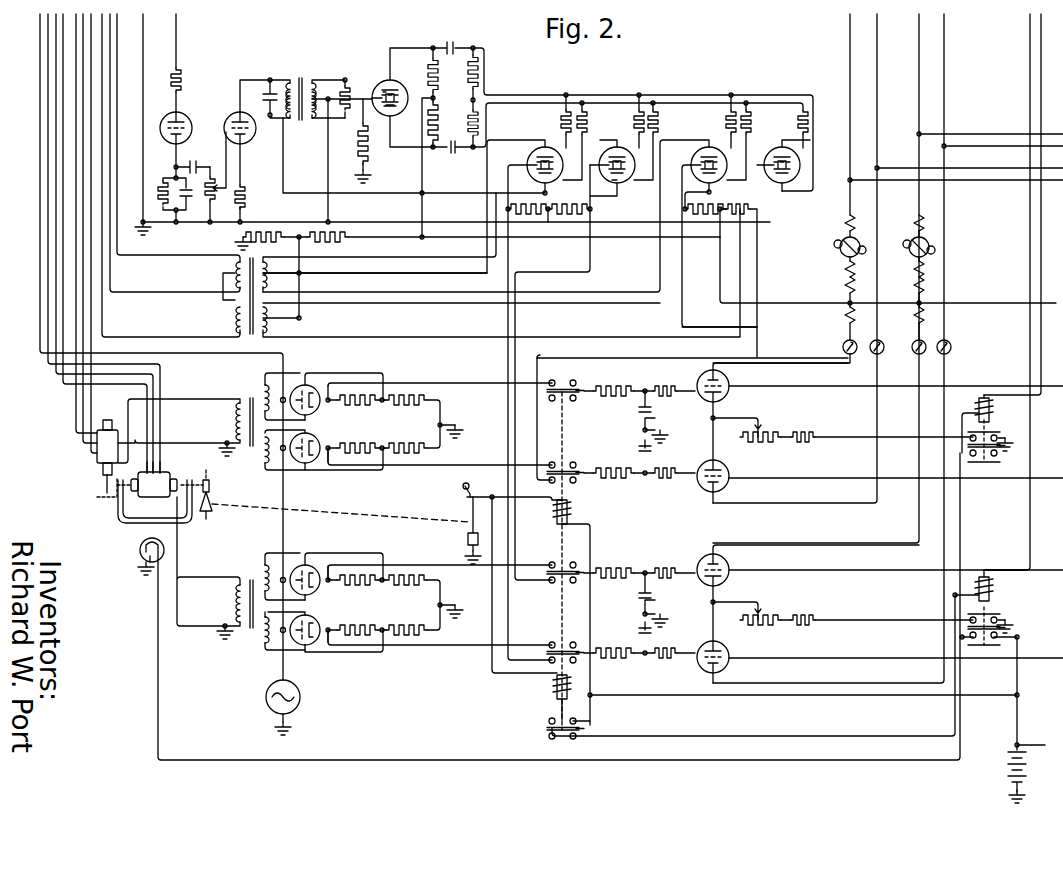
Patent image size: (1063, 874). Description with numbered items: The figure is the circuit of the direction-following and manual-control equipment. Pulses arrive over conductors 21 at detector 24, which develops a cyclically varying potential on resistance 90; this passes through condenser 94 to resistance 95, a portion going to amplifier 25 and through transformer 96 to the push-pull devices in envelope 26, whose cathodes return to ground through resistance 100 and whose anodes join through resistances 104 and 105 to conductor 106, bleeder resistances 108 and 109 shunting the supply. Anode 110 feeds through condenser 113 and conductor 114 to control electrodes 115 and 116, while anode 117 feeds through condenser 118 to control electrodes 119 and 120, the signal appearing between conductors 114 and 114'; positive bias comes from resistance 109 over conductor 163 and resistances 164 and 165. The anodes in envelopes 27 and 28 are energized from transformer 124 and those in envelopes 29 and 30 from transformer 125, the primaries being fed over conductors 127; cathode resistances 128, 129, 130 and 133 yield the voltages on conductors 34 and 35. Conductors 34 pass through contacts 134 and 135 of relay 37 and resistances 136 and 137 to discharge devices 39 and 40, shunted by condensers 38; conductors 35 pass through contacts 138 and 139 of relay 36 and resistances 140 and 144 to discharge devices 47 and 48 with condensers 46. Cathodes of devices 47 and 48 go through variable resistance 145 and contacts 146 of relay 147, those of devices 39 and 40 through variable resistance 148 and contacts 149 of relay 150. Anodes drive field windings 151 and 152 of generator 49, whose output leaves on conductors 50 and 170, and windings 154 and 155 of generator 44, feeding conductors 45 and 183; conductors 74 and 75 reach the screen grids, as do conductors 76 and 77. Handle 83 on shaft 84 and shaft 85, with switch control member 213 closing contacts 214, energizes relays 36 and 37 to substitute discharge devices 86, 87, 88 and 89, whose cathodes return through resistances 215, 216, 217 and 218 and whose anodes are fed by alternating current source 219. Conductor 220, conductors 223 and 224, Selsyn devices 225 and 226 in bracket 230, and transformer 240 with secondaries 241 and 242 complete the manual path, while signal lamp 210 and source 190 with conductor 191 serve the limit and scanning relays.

The conductors 21 is at (143, 42).
The detector 24 is at (188, 114).
The amplifier 25 is at (251, 147).
The envelope 26 is at (398, 83).
The envelope 27 is at (527, 152).
The envelope 28 is at (622, 180).
The envelope 29 is at (693, 152).
The envelope 30 is at (790, 147).
The conductors 34 is at (510, 287).
The conductors 35 is at (755, 327).
The relay 36 is at (557, 516).
The relay 37 is at (556, 688).
The condensers 38 is at (642, 631).
The discharge device 39 is at (729, 581).
The discharge device 40 is at (729, 649).
The generator 44 is at (914, 236).
The conductors 45 is at (919, 43).
The condensers 46 is at (640, 451).
The discharge device 47 is at (729, 396).
The discharge device 48 is at (729, 469).
The generator 49 is at (844, 254).
The conductors 50 is at (876, 48).
The conductor 74 is at (1052, 385).
The conductors 75 is at (1048, 477).
The conductor 76 is at (1050, 569).
The conductor 77 is at (1048, 659).
The handle 83 is at (206, 512).
The shaft 84 is at (204, 480).
The shaft 85 is at (100, 486).
The discharge device 86 is at (312, 387).
The discharge device 87 is at (310, 440).
The discharge device 88 is at (307, 567).
The discharge device 89 is at (308, 644).
The resistance 90 is at (161, 184).
The condenser 94 is at (193, 162).
The resistance 95 is at (208, 206).
The transformer 96 is at (299, 78).
The resistance 100 is at (362, 140).
The resistance 104 is at (440, 86).
The resistance 105 is at (439, 116).
The conductor 106 is at (426, 240).
The resistance 108 is at (340, 241).
The resistance 109 is at (245, 232).
The anode 110 is at (388, 82).
The condenser 113 is at (449, 40).
The conductor 114 is at (550, 81).
The conductor 114' is at (619, 85).
The control electrode 115 is at (560, 130).
The control electrodes 116 is at (614, 184).
The anode 117 is at (392, 114).
The condenser 118 is at (451, 154).
The control electrode 119 is at (564, 178).
The control electrode 120 is at (636, 127).
The transformer 124 is at (269, 280).
The transformer 125 is at (269, 325).
The conductors 127 is at (115, 67).
The resistance 128 is at (528, 214).
The resistance 129 is at (571, 214).
The resistance 130 is at (696, 214).
The resistance 133 is at (739, 214).
The contacts 134 is at (552, 582).
The contacts 135 is at (556, 640).
The resistance 136 is at (617, 571).
The resistance 137 is at (610, 660).
The contacts 138 is at (559, 388).
The contacts 139 is at (564, 470).
The resistance 140 is at (614, 390).
The resistance 144 is at (616, 482).
The variable resistance 145 is at (775, 433).
The contacts 146 is at (992, 430).
The relay 147 is at (978, 407).
The variable resistance 148 is at (780, 611).
The contacts 149 is at (994, 616).
The relay 150 is at (984, 576).
The field winding 151 is at (846, 318).
The field winding 152 is at (846, 288).
The winding 154 is at (914, 282).
The winding 155 is at (916, 318).
The conductor 163 is at (462, 204).
The resistance 164 is at (481, 66).
The resistance 165 is at (481, 125).
The conductors 170 is at (1014, 180).
The conductors 183 is at (1016, 146).
The source of potential 190 is at (1008, 772).
The conductor 191 is at (1044, 740).
The signal lamp 210 is at (138, 551).
The switch control member 213 is at (214, 501).
The contacts 214 is at (476, 488).
The resistances 215 is at (406, 408).
The resistances 216 is at (408, 442).
The resistances 217 is at (406, 589).
The resistances 218 is at (408, 622).
The source of alternating current 219 is at (300, 690).
The conductor 220 is at (40, 45).
The conductors 223 is at (63, 79).
The conductors 224 is at (91, 105).
The Selsyn transformer device 225 is at (100, 435).
The Selsyn transformer 226 is at (152, 497).
The bracket 230 is at (122, 522).
The transformer 240 is at (240, 568).
The secondary 241 is at (265, 561).
The secondary 242 is at (267, 644).